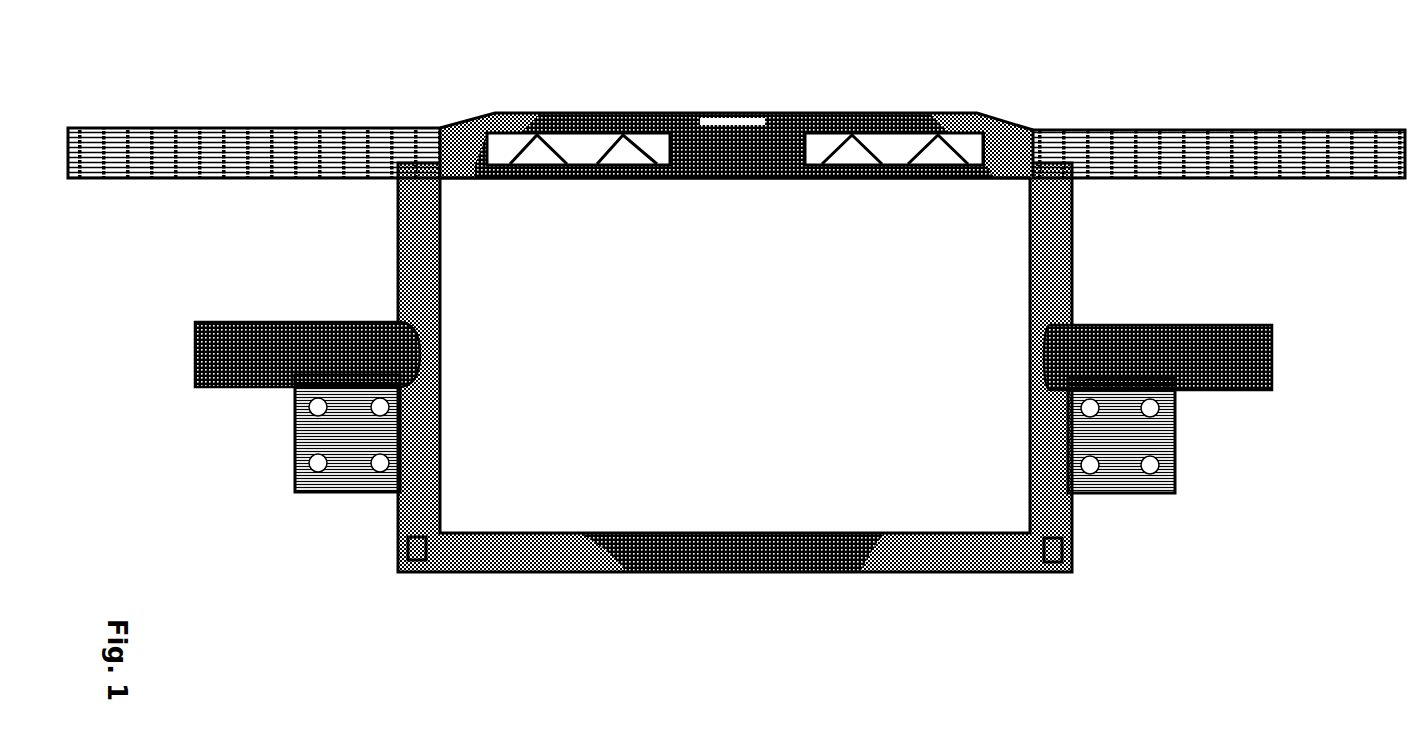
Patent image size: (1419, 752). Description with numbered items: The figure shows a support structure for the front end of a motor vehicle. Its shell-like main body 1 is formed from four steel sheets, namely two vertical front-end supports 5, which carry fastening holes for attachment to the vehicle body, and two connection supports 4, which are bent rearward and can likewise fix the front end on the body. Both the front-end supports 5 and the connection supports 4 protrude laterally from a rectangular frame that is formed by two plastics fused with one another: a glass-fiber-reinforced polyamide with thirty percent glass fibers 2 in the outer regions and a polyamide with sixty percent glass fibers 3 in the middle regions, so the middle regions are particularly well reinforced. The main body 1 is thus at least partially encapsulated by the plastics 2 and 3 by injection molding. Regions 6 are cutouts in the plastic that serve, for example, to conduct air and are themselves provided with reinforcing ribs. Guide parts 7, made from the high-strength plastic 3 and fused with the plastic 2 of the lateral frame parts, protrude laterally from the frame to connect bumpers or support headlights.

The main body 1 is at (830, 108).
The glass-fiber-reinforced thermoplastic with 30% glass fibers 2 is at (503, 572).
The glass-fiber-reinforced thermoplastic with 60% glass fibers 3 is at (740, 572).
The connection supports 4 is at (300, 122).
The vertical front-end supports 5 is at (277, 445).
The regions (cutouts) 6 is at (582, 112).
The guide parts 7 is at (195, 356).